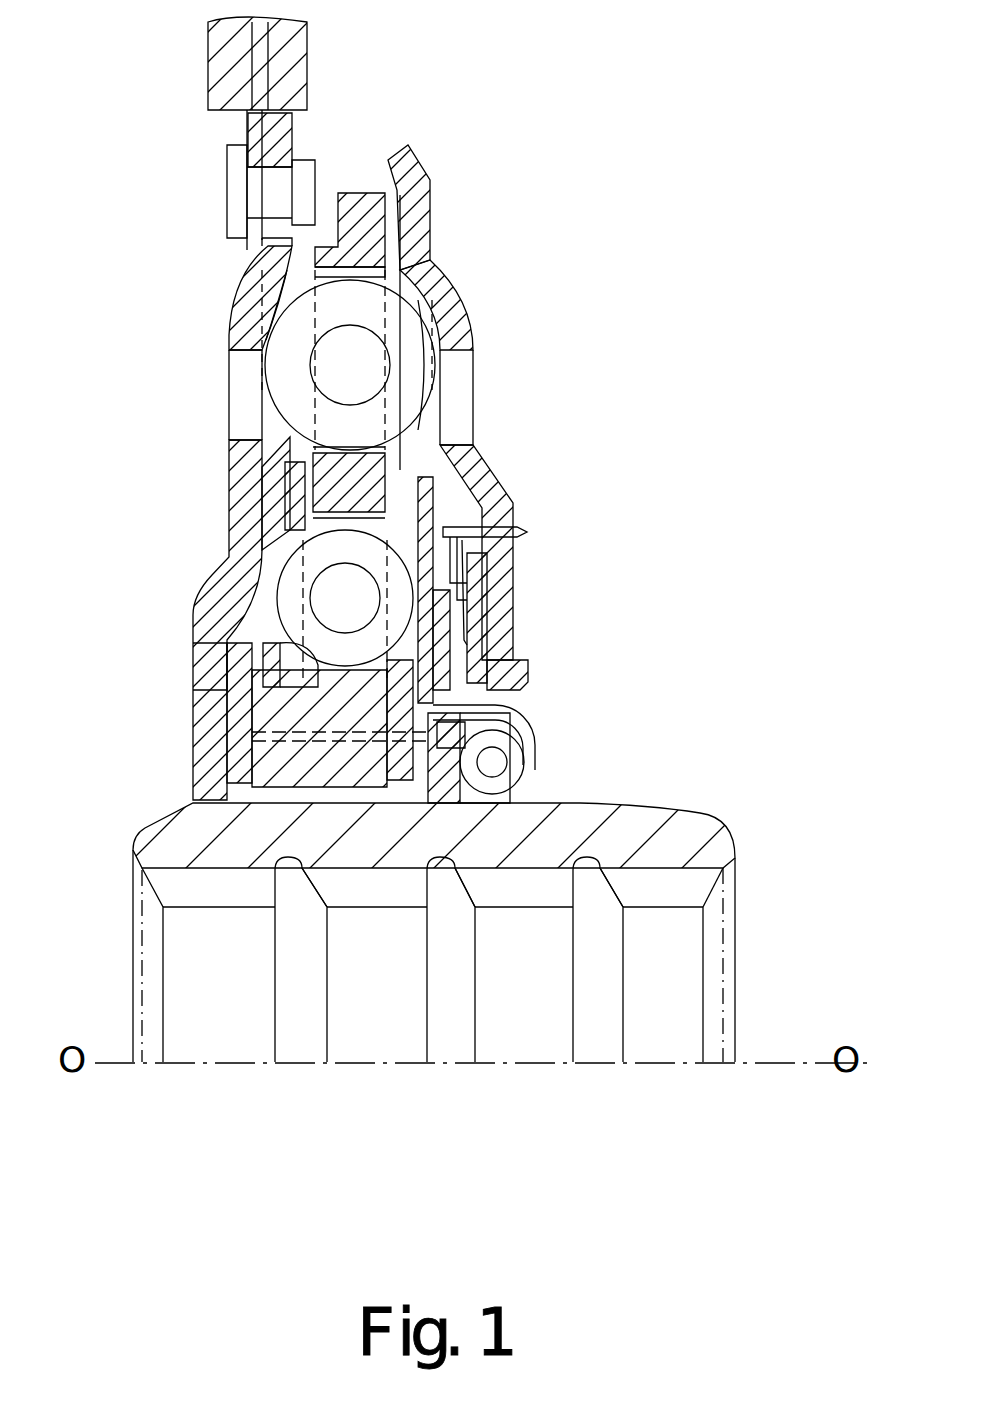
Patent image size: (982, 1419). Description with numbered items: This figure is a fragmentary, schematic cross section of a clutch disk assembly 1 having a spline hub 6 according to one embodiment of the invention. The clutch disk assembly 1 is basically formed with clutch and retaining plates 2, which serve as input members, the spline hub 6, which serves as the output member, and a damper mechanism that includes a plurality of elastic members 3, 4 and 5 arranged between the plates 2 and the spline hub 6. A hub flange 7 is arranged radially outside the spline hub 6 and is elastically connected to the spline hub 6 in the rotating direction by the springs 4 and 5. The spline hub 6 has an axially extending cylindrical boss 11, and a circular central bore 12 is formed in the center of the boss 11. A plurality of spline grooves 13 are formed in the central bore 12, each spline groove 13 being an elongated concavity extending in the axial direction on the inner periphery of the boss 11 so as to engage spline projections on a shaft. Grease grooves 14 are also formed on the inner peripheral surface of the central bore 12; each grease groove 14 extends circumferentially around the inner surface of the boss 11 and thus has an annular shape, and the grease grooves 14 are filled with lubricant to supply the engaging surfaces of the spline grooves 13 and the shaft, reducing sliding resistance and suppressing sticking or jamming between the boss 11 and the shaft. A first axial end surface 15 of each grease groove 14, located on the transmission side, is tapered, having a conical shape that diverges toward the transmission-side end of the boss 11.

The clutch disk assembly 1 is at (572, 217).
The clutch and retaining plates 2 is at (245, 300).
The elastic member 3 is at (415, 338).
The elastic member 4 is at (305, 540).
The elastic member 5 is at (527, 780).
The spline hub 6 is at (484, 945).
The hub flange 7 is at (350, 470).
The cylindrical boss 11 is at (555, 830).
The central bore 12 is at (652, 980).
The spline grooves 13 is at (663, 898).
The grease grooves 14 is at (283, 1015).
The first axial end surface 15 is at (457, 872).